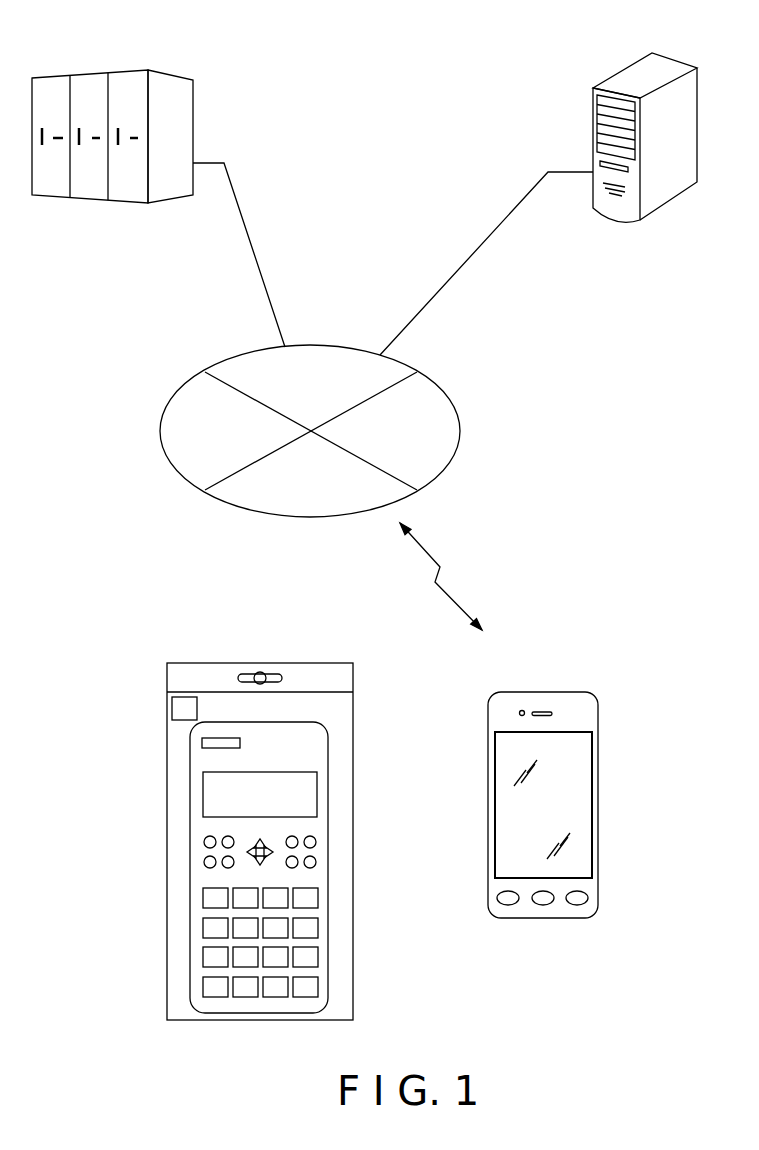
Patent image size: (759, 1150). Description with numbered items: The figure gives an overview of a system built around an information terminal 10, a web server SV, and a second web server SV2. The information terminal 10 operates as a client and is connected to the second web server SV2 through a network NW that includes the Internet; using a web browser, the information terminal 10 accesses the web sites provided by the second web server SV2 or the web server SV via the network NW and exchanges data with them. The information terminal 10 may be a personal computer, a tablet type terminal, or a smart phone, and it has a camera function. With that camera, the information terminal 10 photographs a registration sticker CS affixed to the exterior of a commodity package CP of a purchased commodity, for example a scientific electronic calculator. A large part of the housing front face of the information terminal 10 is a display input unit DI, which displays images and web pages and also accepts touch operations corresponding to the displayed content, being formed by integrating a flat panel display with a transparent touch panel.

The second web server SV2 is at (80, 76).
The web server SV is at (683, 62).
The network NW is at (460, 425).
The commodity package CP is at (198, 667).
The registration sticker CS is at (168, 708).
The information terminal 10 is at (598, 715).
The display input unit DI is at (573, 797).